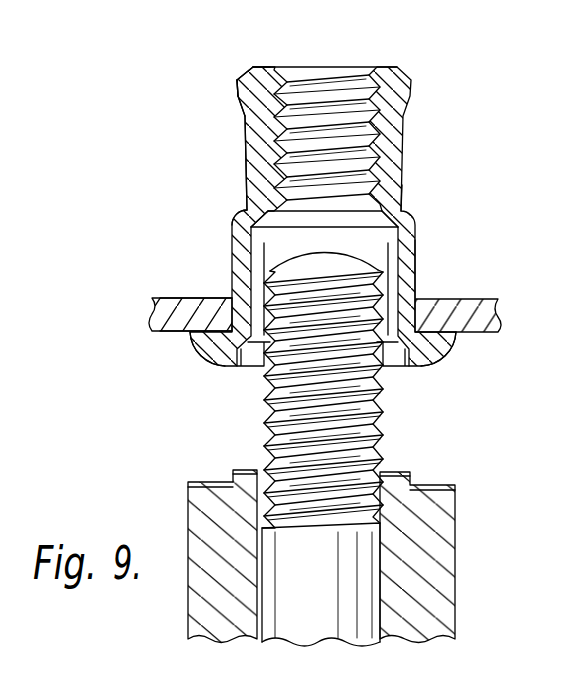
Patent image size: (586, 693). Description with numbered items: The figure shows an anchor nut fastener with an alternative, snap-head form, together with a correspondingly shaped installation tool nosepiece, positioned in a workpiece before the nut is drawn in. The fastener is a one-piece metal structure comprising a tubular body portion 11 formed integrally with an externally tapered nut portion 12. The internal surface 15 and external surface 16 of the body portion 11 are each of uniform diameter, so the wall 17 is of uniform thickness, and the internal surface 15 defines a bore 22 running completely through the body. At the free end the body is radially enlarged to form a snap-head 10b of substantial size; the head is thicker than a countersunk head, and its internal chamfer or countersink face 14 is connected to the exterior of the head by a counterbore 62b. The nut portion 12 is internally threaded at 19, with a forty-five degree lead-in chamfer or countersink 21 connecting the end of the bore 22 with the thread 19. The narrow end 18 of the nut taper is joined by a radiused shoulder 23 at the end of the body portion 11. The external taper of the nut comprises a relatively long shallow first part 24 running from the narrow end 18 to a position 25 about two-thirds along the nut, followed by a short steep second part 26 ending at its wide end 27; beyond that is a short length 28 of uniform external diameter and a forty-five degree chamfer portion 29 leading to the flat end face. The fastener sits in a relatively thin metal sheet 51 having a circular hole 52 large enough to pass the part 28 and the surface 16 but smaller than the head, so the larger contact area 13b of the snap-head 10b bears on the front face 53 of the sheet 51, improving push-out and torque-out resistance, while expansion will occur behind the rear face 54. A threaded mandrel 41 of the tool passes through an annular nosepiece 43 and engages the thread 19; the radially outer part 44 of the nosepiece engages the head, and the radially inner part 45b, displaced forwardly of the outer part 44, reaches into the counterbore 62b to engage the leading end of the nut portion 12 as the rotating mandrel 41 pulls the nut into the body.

The snap-head 10b is at (453, 345).
The tubular body portion 11 is at (413, 257).
The nut portion 12 is at (405, 129).
The head contact area 13b is at (442, 342).
The internal flare or countersink 14 is at (392, 357).
The internal surface 15 is at (392, 242).
The external surface 16 is at (414, 282).
The wall 17 is at (405, 226).
The narrow end of the taper 18 is at (408, 212).
The internal thread 19 is at (358, 88).
The lead-in chamfer or countersink 21 is at (250, 226).
The bore 22 is at (260, 257).
The shoulder 23 is at (236, 214).
The first taper part 24 is at (247, 167).
The wide end of shallow taper 25 is at (245, 116).
The second taper part 26 is at (238, 100).
The wide end of steep taper 27 is at (237, 95).
The uniform diameter part 28 is at (237, 91).
The chamfer portion 29 is at (252, 65).
The threaded mandrel 41 is at (265, 441).
The annular nosepiece 43 is at (446, 476).
The radially outer part of nosepiece 44 is at (450, 488).
The radially inner part of nosepiece 45b is at (402, 472).
The metal sheet 51 is at (152, 313).
The circular hole 52 is at (195, 345).
The front face of the sheet 53 is at (158, 339).
The rear face of the sheet 54 is at (190, 298).
The counterbore 62b is at (248, 368).